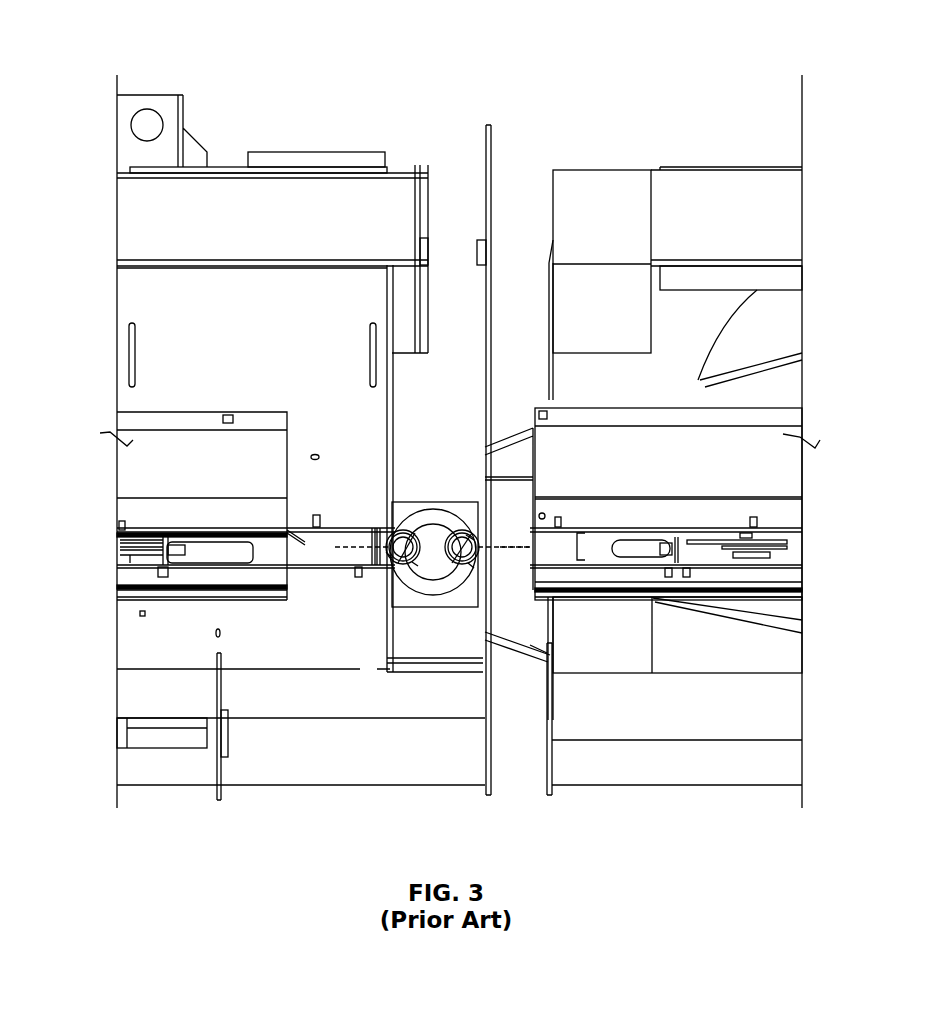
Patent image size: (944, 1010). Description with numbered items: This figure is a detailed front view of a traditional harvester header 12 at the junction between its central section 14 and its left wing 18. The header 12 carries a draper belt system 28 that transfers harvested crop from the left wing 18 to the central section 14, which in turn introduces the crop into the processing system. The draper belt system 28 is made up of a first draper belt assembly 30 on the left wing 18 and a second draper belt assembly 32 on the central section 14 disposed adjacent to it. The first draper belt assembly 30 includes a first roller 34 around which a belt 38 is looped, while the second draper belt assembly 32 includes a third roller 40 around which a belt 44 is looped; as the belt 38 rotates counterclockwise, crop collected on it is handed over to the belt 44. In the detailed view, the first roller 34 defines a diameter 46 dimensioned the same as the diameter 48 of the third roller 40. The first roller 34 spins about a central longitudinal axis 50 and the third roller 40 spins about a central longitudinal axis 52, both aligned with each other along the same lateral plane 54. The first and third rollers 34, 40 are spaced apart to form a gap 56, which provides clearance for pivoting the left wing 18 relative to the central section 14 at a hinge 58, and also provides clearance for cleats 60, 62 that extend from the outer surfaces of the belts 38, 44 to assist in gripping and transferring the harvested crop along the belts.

The header 12 is at (537, 45).
The central section 14 is at (232, 98).
The left wing 18 is at (735, 128).
The draper belt system 28 is at (112, 567).
The first draper belt assembly 30 is at (780, 525).
The second draper belt assembly 32 is at (172, 518).
The first roller 34 is at (474, 566).
The belt 38 is at (790, 566).
The third roller 40 is at (388, 558).
The belt 44 is at (352, 527).
The diameter 46 is at (472, 566).
The diameter 48 is at (416, 566).
The central longitudinal axis 50 is at (472, 537).
The central longitudinal axis 52 is at (408, 530).
The lateral plane 54 is at (505, 545).
The gap 56 is at (437, 566).
The hinge 58 is at (450, 511).
The cleat 60 is at (753, 515).
The cleat 62 is at (317, 513).